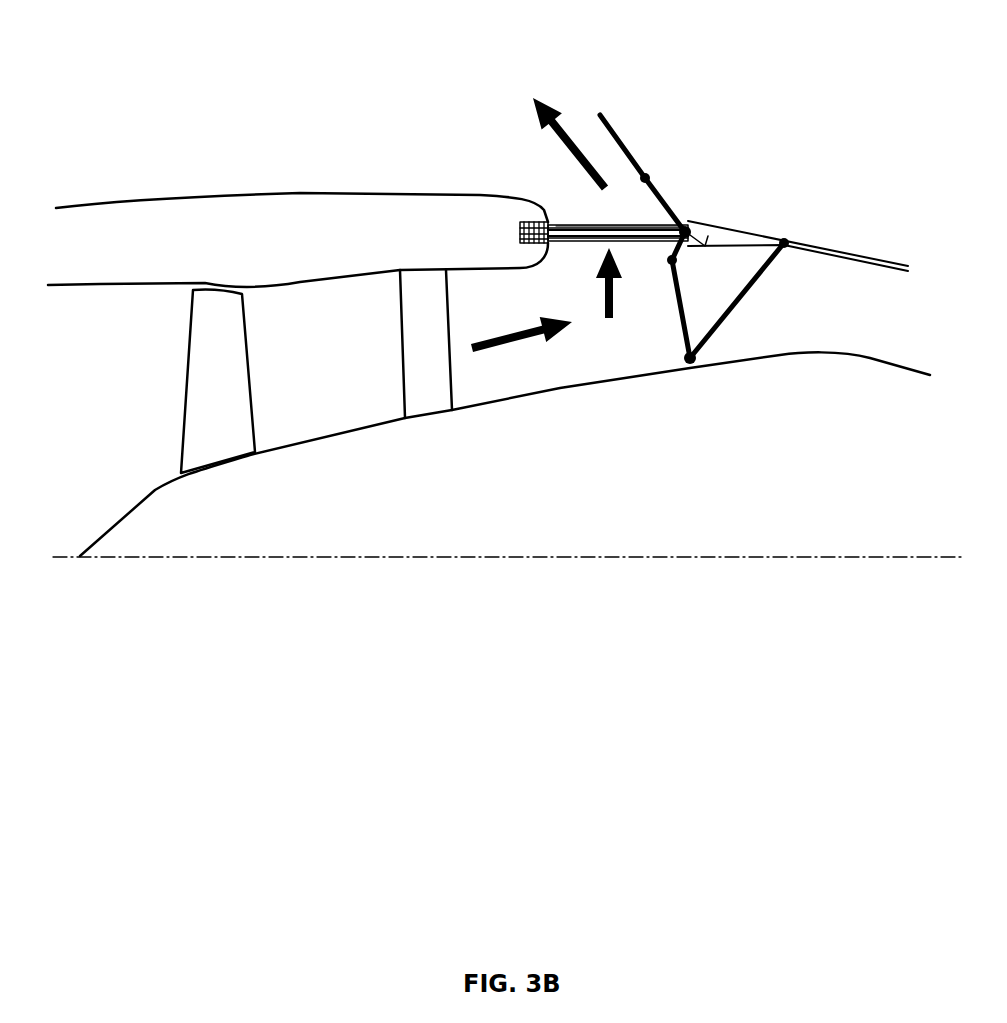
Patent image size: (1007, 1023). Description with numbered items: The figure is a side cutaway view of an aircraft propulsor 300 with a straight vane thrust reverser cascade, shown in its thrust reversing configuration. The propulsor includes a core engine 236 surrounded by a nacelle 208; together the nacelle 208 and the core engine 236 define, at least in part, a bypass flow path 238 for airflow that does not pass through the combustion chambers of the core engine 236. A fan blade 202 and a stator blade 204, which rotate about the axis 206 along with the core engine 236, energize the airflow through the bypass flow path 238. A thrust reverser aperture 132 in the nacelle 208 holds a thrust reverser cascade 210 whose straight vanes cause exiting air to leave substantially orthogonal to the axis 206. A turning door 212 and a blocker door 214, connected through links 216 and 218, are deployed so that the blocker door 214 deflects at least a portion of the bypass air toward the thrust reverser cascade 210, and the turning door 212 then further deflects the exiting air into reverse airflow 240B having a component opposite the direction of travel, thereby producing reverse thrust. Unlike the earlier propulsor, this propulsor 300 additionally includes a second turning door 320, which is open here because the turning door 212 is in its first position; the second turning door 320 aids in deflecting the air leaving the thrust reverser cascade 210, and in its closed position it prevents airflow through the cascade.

The aircraft propulsor 300 is at (140, 120).
The nacelle 208 is at (318, 190).
The thrust reverser cascade 210 is at (560, 222).
The second turning door 320 is at (610, 218).
The thrust reverser aperture 132 is at (618, 210).
The turning door 212 is at (645, 170).
The link 216 is at (665, 207).
The link 218 is at (742, 290).
The fan blade 202 is at (185, 362).
The bypass flow path 238 is at (312, 378).
The core engine 236 is at (158, 490).
The axis 206 is at (365, 558).
The stator blade 204 is at (455, 387).
The blocker door 214 is at (683, 325).
The reverse airflow 240B is at (552, 129).